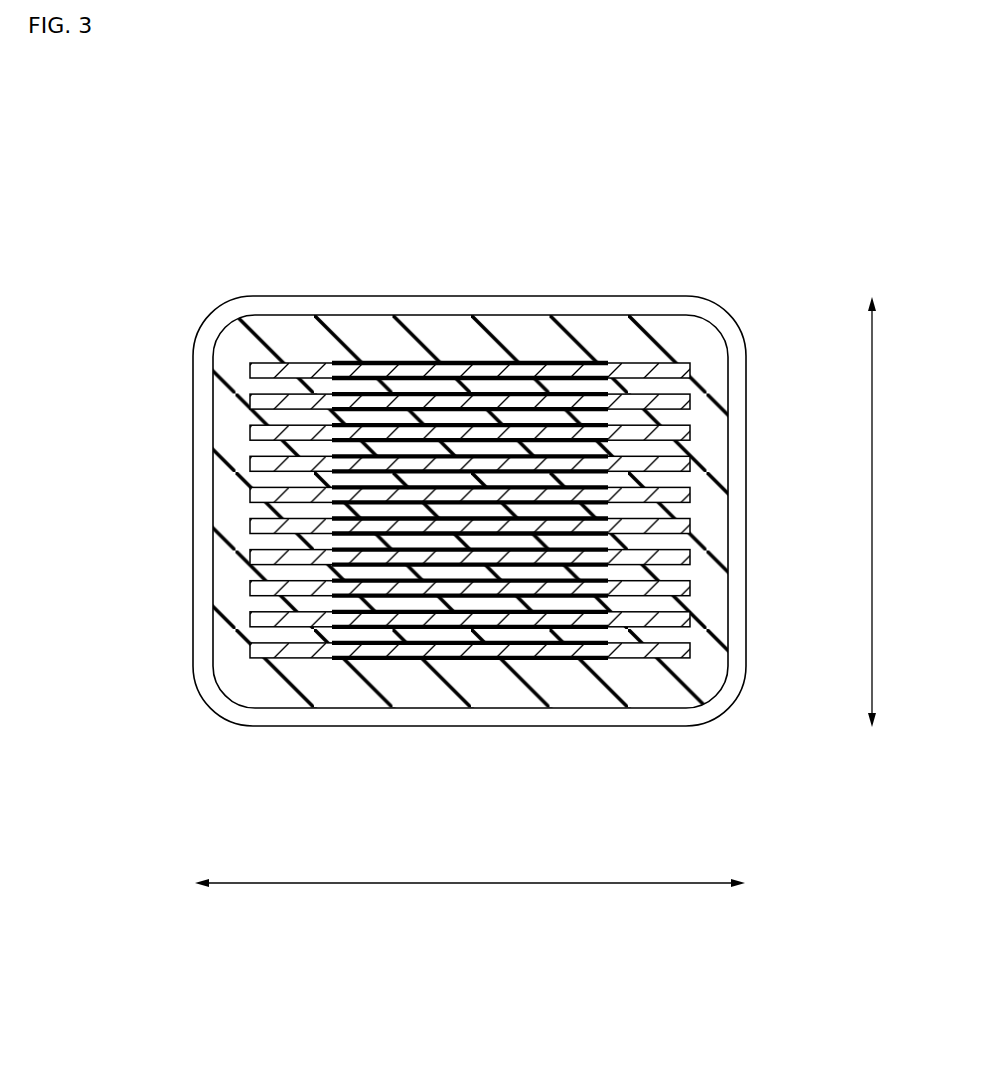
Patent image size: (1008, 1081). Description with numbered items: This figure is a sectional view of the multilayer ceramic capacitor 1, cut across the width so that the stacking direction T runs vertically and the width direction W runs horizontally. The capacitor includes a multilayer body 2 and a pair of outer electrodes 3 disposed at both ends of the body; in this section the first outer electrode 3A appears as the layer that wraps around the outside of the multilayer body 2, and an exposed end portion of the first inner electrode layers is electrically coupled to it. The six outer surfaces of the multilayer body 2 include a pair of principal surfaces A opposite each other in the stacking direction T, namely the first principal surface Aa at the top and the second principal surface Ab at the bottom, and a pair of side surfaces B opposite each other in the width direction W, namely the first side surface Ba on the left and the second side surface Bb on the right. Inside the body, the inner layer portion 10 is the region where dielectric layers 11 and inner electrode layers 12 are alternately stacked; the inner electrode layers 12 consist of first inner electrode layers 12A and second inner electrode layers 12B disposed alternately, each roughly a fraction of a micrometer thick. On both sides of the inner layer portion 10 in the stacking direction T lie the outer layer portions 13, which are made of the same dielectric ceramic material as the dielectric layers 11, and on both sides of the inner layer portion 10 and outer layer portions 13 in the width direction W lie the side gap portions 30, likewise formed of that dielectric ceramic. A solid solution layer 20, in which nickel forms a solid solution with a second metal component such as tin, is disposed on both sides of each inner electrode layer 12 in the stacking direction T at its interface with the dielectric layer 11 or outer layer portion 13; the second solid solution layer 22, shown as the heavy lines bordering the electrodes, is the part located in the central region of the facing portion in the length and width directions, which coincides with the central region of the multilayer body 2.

The multilayer ceramic capacitor 1 is at (730, 245).
The multilayer body 2 is at (578, 302).
The outer electrodes 3 is at (469, 478).
The first outer electrode 3A is at (355, 300).
The principal surface A is at (471, 515).
The first principal surface Aa is at (527, 296).
The second principal surface Ab is at (482, 727).
The side surface B is at (471, 478).
The first side surface Ba is at (213, 667).
The second side surface Bb is at (728, 645).
The inner layer portion 10 is at (210, 363).
The dielectric layers 11 is at (260, 388).
The inner electrode layers 12 is at (395, 510).
The first inner electrode layers 12A is at (260, 370).
The second inner electrode layers 12B is at (260, 405).
The outer layer portions 13 is at (273, 337).
The solid solution layer 20 is at (470, 444).
The second solid solution layer 22 is at (400, 390).
The side gap portions 30 is at (703, 420).
The stacking direction T is at (882, 512).
The width direction W is at (470, 896).